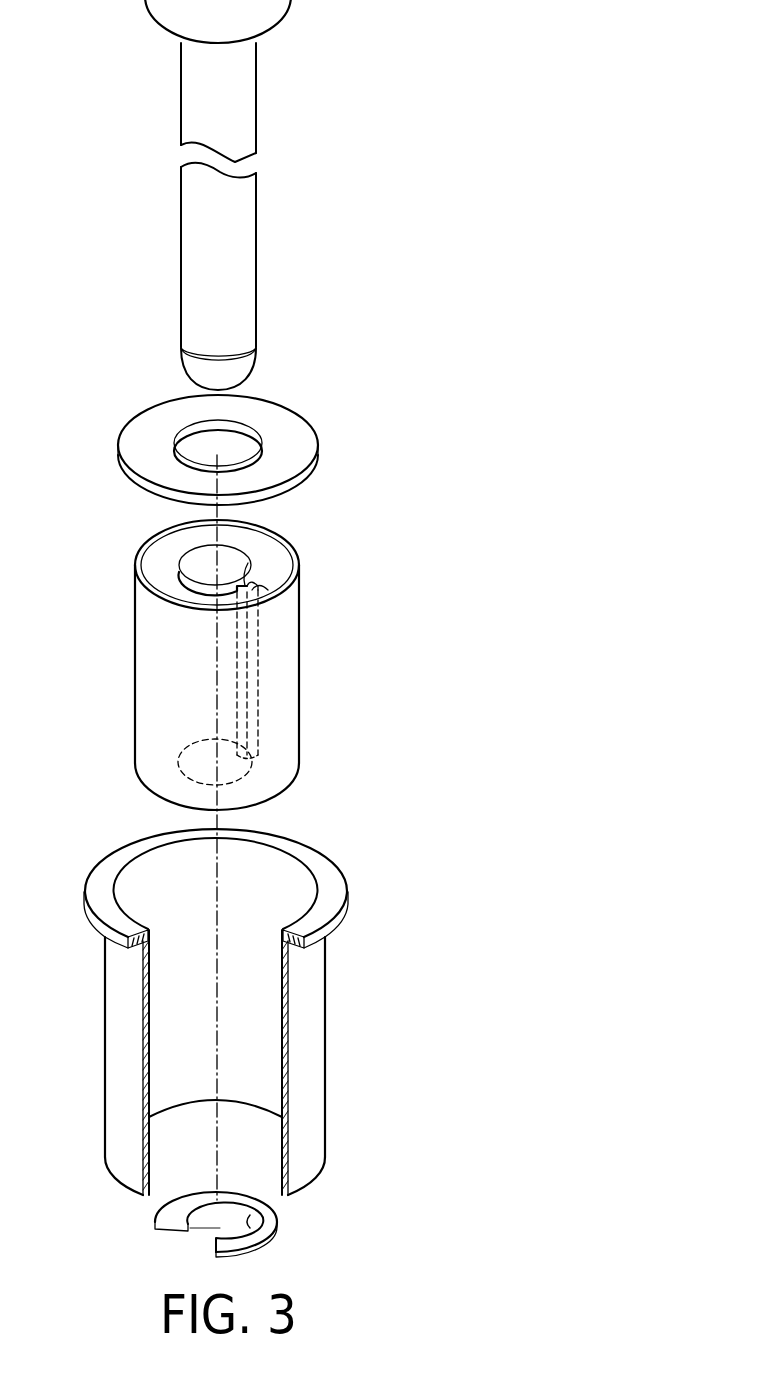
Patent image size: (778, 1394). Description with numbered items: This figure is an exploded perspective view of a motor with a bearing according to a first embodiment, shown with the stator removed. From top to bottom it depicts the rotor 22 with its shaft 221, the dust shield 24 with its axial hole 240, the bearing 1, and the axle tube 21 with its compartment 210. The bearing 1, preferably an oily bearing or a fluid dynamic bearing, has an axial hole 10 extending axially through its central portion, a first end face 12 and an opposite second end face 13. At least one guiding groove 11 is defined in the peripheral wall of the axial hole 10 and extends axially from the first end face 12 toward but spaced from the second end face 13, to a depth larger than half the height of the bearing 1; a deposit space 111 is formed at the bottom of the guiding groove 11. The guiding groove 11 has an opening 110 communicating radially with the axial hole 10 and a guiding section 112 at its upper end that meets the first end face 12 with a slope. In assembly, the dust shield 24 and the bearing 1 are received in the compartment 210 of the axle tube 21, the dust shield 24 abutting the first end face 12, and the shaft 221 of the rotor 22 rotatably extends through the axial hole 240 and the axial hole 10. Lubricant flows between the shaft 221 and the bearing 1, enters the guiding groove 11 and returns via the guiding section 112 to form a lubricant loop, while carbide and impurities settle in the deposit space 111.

The bearing 1 is at (222, 650).
The axial hole 10 is at (198, 563).
The guiding groove 11 is at (323, 615).
The opening 110 is at (248, 583).
The deposit space 111 is at (262, 757).
The guiding section 112 is at (255, 585).
The first end face 12 is at (158, 577).
The second end face 13 is at (152, 791).
The axle tube 21 is at (259, 1004).
The compartment 210 is at (275, 885).
The rotor 22 is at (268, 18).
The shaft 221 is at (236, 225).
The dust shield 24 is at (226, 428).
The axial hole 240 is at (190, 443).